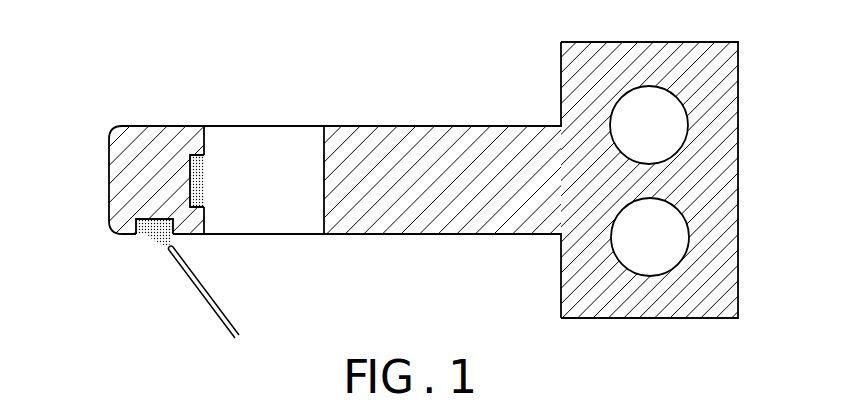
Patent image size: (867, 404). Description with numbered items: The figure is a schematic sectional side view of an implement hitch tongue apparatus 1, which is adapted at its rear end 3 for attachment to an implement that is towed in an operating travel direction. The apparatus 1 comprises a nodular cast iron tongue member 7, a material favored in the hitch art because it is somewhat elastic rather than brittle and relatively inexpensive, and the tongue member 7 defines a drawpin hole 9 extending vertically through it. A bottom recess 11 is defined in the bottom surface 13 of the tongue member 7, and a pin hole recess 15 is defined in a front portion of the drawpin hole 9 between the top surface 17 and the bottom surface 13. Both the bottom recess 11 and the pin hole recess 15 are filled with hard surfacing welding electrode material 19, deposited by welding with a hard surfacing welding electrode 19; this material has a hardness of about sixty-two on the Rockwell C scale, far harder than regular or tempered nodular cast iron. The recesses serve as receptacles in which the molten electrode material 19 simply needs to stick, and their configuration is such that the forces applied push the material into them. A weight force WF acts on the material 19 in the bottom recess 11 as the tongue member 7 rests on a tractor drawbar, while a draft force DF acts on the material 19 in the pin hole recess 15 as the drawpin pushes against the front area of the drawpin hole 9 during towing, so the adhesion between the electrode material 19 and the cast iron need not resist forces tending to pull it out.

The implement hitch tongue apparatus 1 is at (252, 52).
The rear end 3 is at (655, 42).
The tongue member 7 is at (113, 128).
The drawpin hole 9 is at (308, 142).
The bottom recess 11 is at (144, 235).
The bottom surface 13 is at (447, 235).
The pin hole recess 15 is at (200, 165).
The top surface 17 is at (476, 127).
The hard surfacing welding electrode material 19 is at (204, 172).
The draft force DF is at (226, 181).
The weight force WF is at (151, 258).